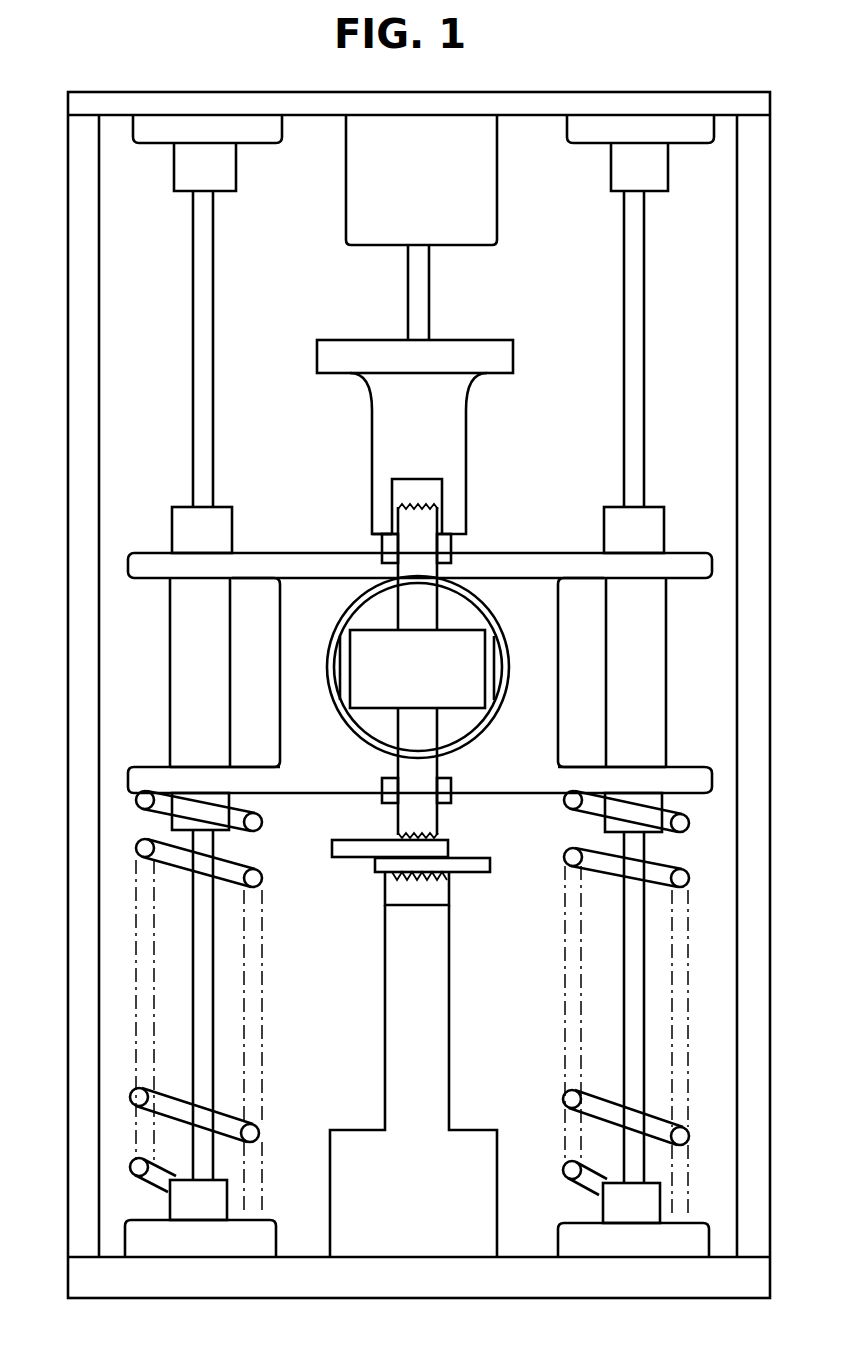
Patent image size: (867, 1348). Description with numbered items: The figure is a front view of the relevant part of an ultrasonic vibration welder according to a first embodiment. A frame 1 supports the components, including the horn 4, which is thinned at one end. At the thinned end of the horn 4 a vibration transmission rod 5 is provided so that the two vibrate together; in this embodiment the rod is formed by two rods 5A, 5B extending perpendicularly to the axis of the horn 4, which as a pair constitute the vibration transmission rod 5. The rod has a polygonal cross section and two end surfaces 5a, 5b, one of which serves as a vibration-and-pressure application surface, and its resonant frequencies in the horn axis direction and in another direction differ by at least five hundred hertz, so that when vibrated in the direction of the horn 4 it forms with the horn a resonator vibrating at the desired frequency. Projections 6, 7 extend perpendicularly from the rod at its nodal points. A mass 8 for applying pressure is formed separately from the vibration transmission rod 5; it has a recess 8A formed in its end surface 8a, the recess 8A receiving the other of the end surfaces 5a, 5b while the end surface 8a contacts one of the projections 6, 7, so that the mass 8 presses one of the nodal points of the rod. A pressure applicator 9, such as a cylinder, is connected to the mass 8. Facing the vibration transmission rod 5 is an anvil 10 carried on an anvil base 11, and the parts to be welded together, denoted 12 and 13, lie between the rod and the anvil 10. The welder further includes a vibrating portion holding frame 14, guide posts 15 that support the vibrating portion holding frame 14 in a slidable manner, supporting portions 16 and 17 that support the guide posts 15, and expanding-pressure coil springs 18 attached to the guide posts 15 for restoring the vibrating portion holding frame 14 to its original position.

The frame 1 is at (72, 713).
The horn 4 is at (462, 624).
The vibration transmission rod 5 is at (425, 637).
The rod 5A is at (424, 602).
The rod 5B is at (424, 773).
The end surface 5a is at (408, 500).
The end surface 5b is at (424, 842).
The projection 6 is at (380, 547).
The projection 7 is at (381, 795).
The mass 8 is at (447, 421).
The recess 8A is at (437, 492).
The end surface 8a is at (378, 530).
The pressure applicator 9 is at (477, 206).
The anvil 10 is at (400, 890).
The anvil base 11 is at (446, 991).
The part to be welded 12 is at (346, 855).
The part to be welded 13 is at (482, 874).
The vibrating portion holding frame 14 is at (283, 566).
The guide post 15 is at (206, 353).
The supporting portion 16 is at (222, 173).
The supporting portion 17 is at (210, 1196).
The expanding-pressure coil spring 18 is at (226, 1122).